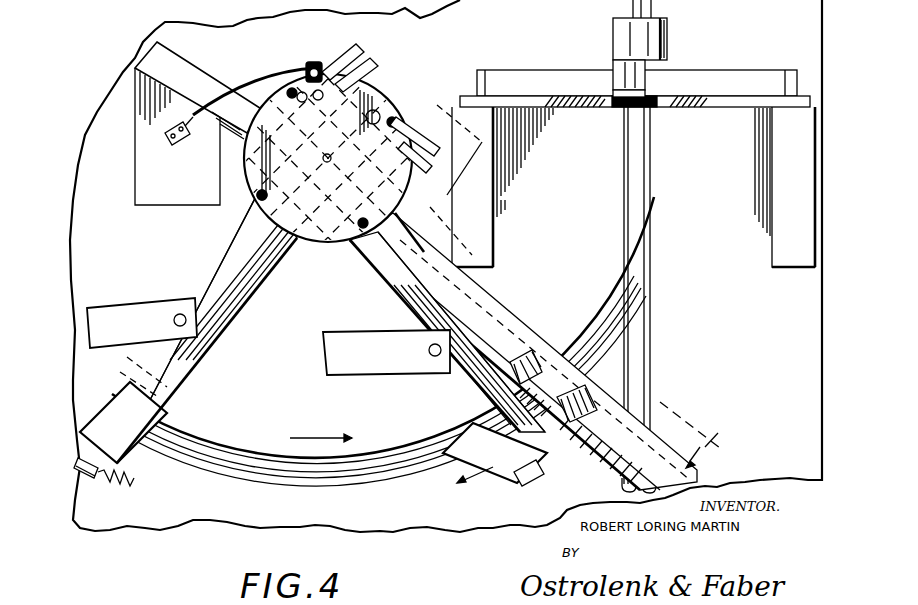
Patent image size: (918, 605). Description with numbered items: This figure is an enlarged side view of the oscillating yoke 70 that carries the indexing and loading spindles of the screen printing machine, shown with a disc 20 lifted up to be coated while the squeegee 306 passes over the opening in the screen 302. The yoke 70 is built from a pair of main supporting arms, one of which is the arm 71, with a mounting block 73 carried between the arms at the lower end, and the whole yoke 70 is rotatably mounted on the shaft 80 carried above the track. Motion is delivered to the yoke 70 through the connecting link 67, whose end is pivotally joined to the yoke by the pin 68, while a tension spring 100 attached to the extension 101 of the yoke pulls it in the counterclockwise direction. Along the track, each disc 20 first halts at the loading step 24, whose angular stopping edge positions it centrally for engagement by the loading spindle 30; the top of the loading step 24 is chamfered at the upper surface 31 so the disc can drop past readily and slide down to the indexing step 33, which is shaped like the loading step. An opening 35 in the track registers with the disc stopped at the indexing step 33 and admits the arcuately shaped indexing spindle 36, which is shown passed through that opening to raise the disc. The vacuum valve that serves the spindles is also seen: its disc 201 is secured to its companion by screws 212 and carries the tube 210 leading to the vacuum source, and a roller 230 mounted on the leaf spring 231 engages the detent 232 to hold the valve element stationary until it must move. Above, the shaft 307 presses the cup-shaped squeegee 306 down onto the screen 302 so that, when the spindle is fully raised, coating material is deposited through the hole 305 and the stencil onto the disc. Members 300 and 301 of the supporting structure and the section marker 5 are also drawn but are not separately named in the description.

The section line 5- 5 is at (690, 439).
The disc 20 is at (656, 103).
The loading step 24 is at (398, 218).
The loading spindle 30 is at (448, 165).
The chamfered upper surface 31 is at (410, 240).
The indexing step 33 is at (592, 396).
The opening 35 is at (540, 388).
The indexing spindle 36 is at (636, 245).
The connecting link 67 is at (108, 318).
The pin 68 is at (178, 314).
The yoke 70 is at (270, 278).
The main supporting arm 71 is at (228, 258).
The mounting block 73 is at (135, 372).
The shaft 80 is at (332, 146).
The tension spring 100 is at (390, 97).
The extension 101 is at (78, 470).
The valve element disc 201 is at (256, 195).
The tube 210 is at (360, 60).
The screw 212 is at (287, 93).
The roller 230 is at (314, 62).
The leaf spring 231 is at (165, 134).
The detent 232 is at (302, 4).
The frame 300 is at (460, 98).
The frame end 301 is at (480, 72).
The screen 302 is at (700, 97).
The hole 305 is at (612, 107).
The squeegee 306 is at (616, 72).
The shaft 307 is at (633, 8).